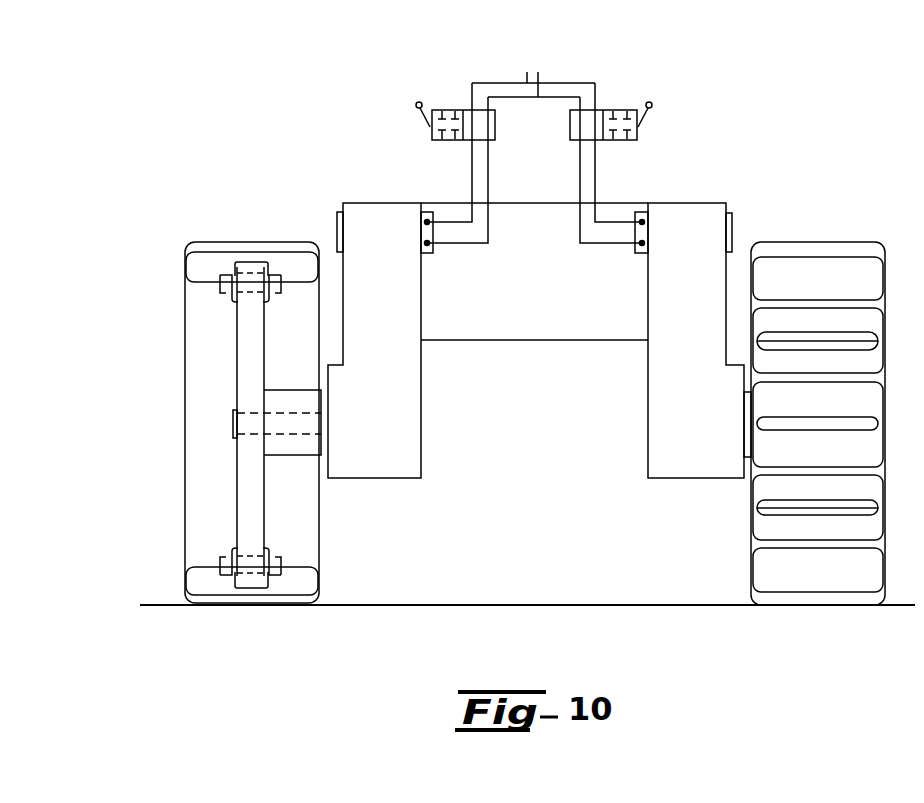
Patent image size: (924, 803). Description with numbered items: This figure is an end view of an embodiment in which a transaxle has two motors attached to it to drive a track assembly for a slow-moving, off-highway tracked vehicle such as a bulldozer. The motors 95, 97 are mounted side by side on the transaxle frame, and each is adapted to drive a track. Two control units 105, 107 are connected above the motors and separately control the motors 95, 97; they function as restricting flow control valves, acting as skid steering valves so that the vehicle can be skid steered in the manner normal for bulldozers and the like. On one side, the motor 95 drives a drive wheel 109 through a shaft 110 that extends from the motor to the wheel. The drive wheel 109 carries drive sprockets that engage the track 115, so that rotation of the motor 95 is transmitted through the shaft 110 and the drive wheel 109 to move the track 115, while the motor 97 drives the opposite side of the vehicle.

The motor 95 is at (382, 203).
The motor 97 is at (687, 203).
The control unit 105 is at (443, 110).
The control unit 107 is at (596, 108).
The drive wheel 109 is at (237, 360).
The shaft 110 is at (233, 425).
The track 115 is at (248, 242).